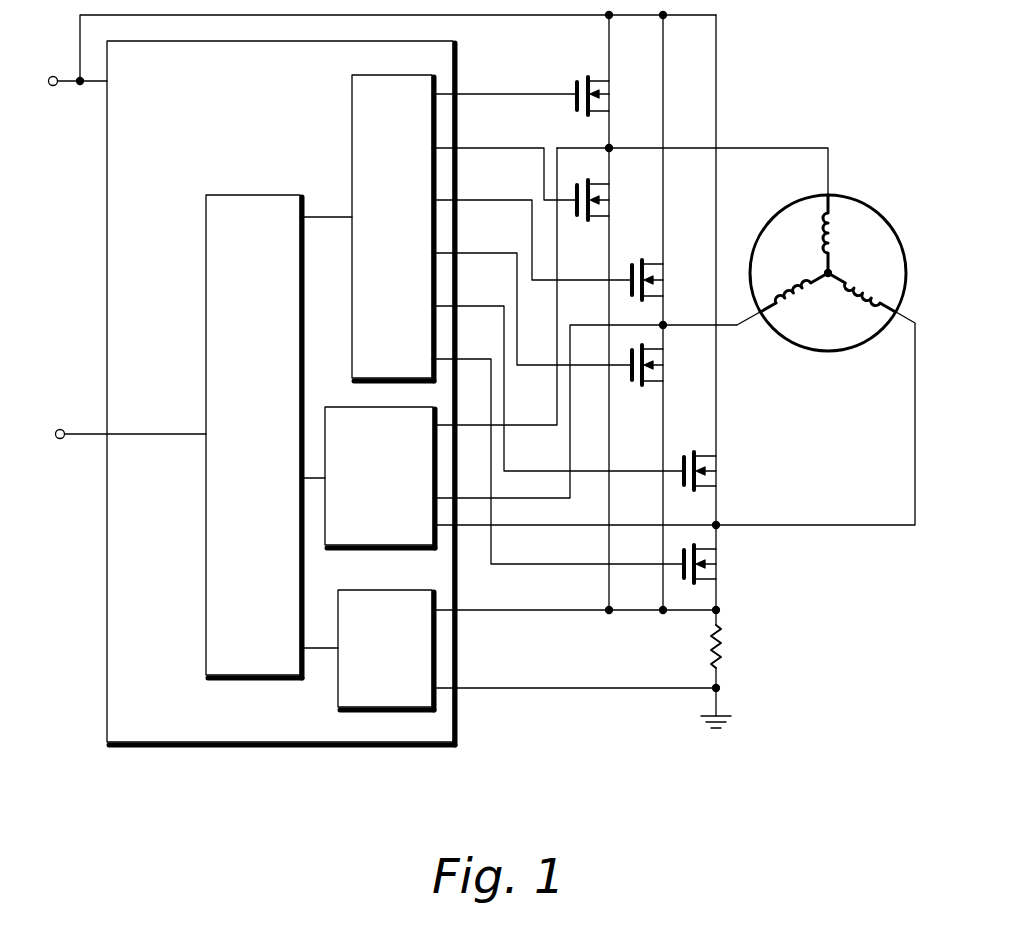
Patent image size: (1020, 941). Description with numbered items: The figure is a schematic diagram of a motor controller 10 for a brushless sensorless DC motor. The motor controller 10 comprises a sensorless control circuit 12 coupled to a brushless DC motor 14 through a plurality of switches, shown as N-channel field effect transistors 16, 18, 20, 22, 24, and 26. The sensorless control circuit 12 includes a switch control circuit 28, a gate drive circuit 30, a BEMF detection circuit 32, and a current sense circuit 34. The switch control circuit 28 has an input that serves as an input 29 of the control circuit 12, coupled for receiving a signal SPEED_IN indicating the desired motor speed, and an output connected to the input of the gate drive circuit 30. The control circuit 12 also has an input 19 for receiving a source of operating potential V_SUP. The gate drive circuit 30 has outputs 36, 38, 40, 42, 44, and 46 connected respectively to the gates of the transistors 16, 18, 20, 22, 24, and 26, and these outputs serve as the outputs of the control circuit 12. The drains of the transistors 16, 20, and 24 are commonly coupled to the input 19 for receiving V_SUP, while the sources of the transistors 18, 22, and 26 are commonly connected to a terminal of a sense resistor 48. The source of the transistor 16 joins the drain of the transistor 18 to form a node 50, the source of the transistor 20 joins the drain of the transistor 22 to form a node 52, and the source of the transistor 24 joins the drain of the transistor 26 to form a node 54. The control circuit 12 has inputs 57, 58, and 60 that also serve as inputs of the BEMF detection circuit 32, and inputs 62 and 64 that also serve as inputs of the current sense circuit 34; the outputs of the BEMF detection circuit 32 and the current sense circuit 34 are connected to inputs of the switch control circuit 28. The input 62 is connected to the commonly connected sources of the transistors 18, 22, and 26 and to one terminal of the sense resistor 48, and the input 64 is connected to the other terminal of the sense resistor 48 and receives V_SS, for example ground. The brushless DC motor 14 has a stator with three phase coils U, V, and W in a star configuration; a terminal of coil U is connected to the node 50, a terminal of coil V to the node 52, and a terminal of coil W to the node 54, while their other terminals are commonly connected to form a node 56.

The motor controller 10 is at (568, 801).
The sensorless control circuit 12 is at (208, 750).
The brushless DC motor 14 is at (823, 271).
The field effect transistor 16 is at (604, 90).
The field effect transistor 18 is at (606, 196).
The input 19 is at (55, 88).
The field effect transistor 20 is at (656, 280).
The field effect transistor 22 is at (656, 366).
The field effect transistor 24 is at (709, 470).
The field effect transistor 26 is at (708, 563).
The switch control circuit 28 is at (235, 194).
The input 29 is at (62, 440).
The gate drive circuit 30 is at (350, 122).
The BEMF detection circuit 32 is at (360, 405).
The current sense circuit 34 is at (393, 589).
The output 36 is at (463, 94).
The output 38 is at (463, 148).
The output 40 is at (463, 200).
The output 42 is at (463, 253).
The output 44 is at (463, 306).
The output 46 is at (463, 359).
The sense resistor 48 is at (727, 654).
The node 50 is at (611, 147).
The node 52 is at (665, 323).
The node 54 is at (718, 523).
The node 56 is at (831, 278).
The input 57 is at (467, 425).
The input 58 is at (467, 498).
The input 60 is at (470, 528).
The input 62 is at (467, 610).
The input 64 is at (467, 688).